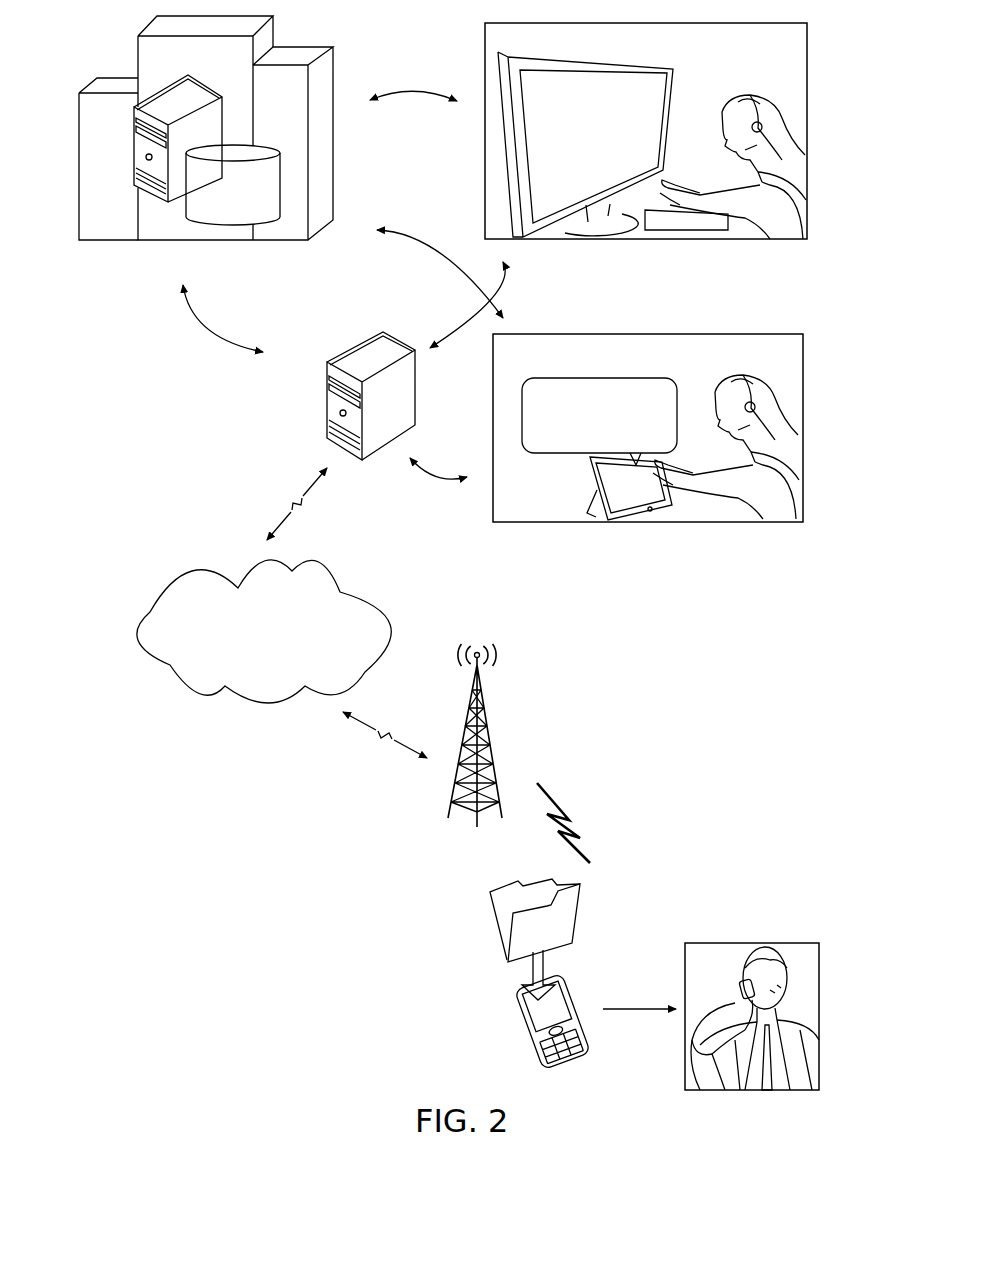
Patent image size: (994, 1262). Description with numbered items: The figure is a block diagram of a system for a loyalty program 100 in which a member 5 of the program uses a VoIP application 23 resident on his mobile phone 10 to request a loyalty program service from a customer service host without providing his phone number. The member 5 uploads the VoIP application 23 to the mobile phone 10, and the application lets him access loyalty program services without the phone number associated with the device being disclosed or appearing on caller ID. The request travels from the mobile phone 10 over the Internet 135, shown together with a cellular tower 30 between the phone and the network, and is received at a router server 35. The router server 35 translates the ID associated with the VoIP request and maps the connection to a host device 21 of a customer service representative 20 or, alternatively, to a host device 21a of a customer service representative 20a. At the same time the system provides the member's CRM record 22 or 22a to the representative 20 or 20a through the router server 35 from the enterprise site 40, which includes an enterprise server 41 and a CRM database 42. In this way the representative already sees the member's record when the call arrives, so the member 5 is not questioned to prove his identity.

The system for a loyalty program 100 is at (146, 813).
The enterprise site 40 is at (117, 56).
The enterprise server 41 is at (172, 200).
The CRM database 42 is at (232, 220).
The router server 35 is at (342, 362).
The customer service representative 20 is at (784, 240).
The host device 21 is at (531, 238).
The CRM record 22 is at (613, 170).
The customer service representative 20a is at (750, 372).
The host device 21a is at (612, 522).
The CRM record 22a is at (653, 396).
The Internet 135 is at (372, 598).
The cellular tower 30 is at (495, 765).
The VoIP application 23 is at (490, 893).
The mobile phone 10 is at (520, 993).
The member 5 is at (768, 943).